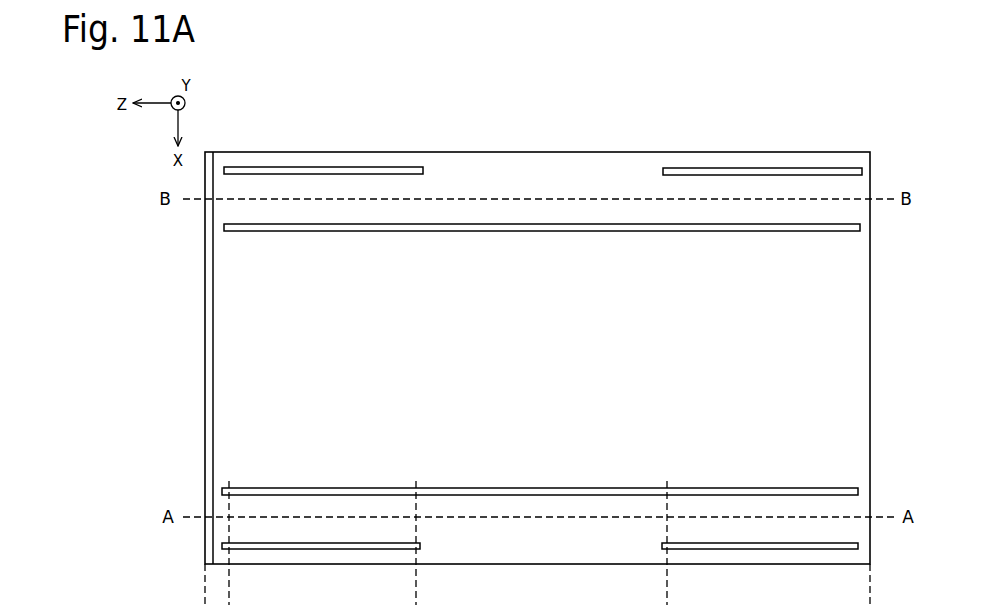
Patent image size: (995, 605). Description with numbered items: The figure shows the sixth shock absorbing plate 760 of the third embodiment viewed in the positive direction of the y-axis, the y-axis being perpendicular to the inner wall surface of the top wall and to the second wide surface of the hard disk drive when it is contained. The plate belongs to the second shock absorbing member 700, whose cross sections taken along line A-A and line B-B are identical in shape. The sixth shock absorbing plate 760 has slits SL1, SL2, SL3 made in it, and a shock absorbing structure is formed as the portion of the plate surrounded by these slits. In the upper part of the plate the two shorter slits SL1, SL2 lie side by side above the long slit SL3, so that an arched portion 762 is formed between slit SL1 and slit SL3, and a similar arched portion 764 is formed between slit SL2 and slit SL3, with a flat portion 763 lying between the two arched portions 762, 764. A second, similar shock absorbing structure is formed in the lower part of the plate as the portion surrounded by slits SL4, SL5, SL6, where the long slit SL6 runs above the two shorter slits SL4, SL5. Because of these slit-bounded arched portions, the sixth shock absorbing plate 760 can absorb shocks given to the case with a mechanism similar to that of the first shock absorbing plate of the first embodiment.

The second shock absorbing member 700 is at (295, 77).
The sixth shock absorbing plate 760 is at (628, 152).
The arched portion 762 is at (281, 505).
The flat portion 763 is at (471, 508).
The arched portion 764 is at (722, 505).
The slit SL1 is at (310, 170).
The slit SL2 is at (736, 170).
The slit SL3 is at (307, 232).
The slit SL4 is at (307, 549).
The slit SL5 is at (735, 549).
The slit SL6 is at (307, 487).